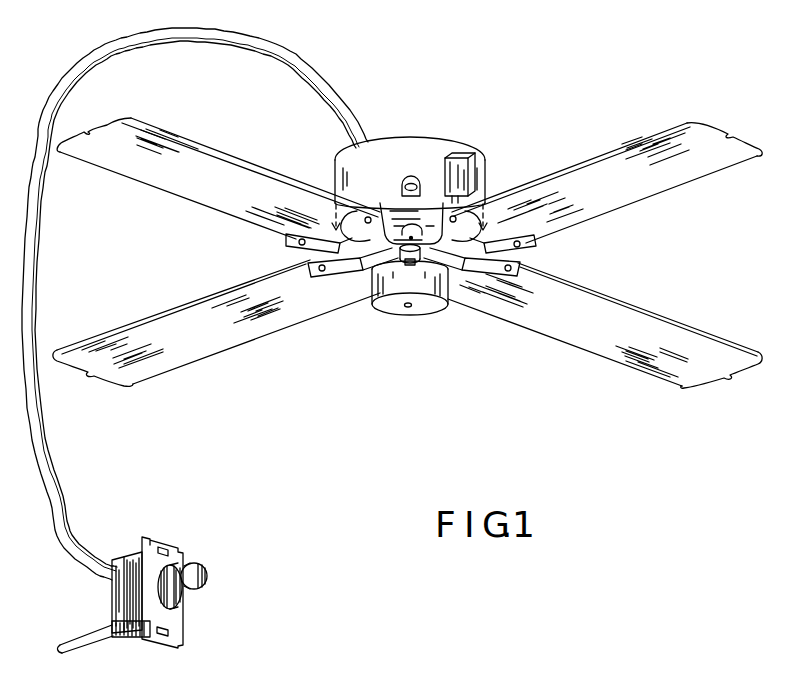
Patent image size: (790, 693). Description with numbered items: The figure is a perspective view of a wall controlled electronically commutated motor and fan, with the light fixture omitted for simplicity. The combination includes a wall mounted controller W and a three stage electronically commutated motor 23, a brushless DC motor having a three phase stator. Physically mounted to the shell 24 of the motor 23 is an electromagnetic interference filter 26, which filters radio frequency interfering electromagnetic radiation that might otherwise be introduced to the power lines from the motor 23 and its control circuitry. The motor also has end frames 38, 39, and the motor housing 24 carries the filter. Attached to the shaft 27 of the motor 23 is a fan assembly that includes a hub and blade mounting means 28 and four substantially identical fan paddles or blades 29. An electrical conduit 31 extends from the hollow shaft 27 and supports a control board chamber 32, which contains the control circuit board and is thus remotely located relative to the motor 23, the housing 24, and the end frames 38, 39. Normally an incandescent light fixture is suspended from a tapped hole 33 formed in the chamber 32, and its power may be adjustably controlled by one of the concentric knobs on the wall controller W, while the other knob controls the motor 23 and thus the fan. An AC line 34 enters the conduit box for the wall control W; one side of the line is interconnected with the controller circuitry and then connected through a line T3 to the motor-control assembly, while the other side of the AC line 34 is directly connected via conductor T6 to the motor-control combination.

The electronically commutated motor 23 is at (485, 172).
The shell 24 is at (410, 152).
The electromagnetic interference filter 26 is at (467, 168).
The shaft 27 is at (367, 269).
The hub and blade mounting means 28 is at (532, 237).
The fan blades 29 is at (664, 194).
The electrical conduit 31 is at (410, 261).
The control board chamber 32 is at (380, 305).
The tapped hole 33 is at (406, 313).
The AC line 34 is at (77, 643).
The motor end frame 38 is at (381, 206).
The motor end frame 39 is at (389, 136).
The line T3 is at (58, 534).
The conductor T6 is at (62, 497).
The wall mounted controller W is at (123, 590).